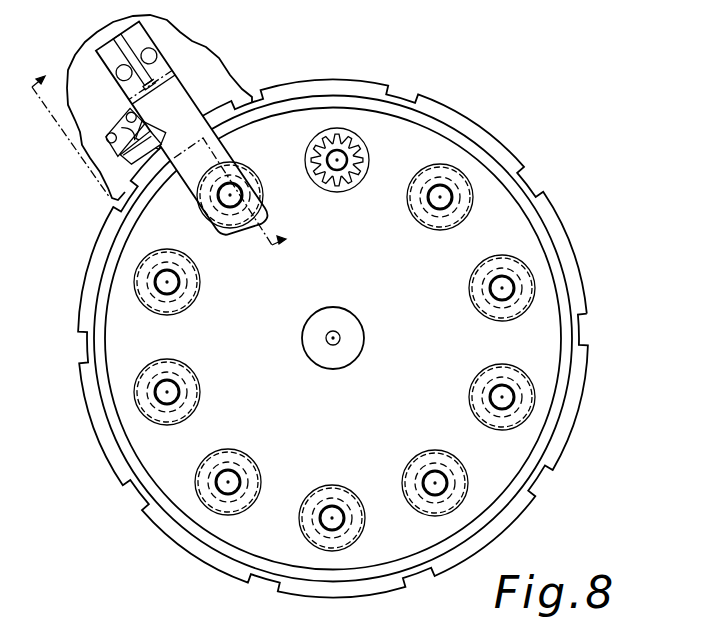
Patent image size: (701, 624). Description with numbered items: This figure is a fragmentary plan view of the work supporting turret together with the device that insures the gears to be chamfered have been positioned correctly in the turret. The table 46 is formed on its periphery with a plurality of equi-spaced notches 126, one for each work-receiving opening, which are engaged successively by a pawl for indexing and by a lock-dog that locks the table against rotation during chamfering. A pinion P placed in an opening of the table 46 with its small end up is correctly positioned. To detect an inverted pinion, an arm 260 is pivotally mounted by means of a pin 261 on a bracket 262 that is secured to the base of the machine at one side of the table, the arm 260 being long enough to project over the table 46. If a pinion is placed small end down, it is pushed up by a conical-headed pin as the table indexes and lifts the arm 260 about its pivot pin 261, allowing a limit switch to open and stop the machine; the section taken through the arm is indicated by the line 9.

The table 46 is at (547, 341).
The notches 126 is at (138, 500).
The pinion P is at (421, 178).
The arm 260 is at (183, 107).
The pin 261 is at (167, 68).
The bracket 262 is at (205, 53).
The section line 9- 9 is at (160, 150).